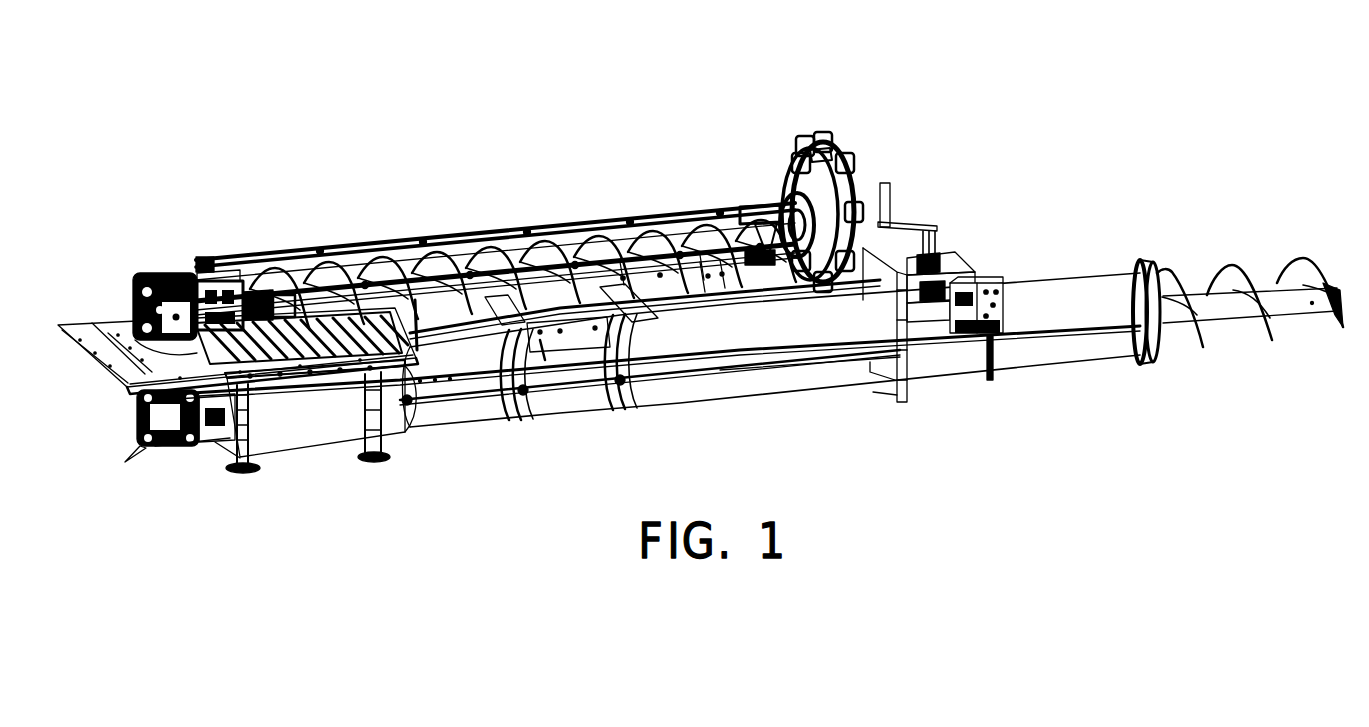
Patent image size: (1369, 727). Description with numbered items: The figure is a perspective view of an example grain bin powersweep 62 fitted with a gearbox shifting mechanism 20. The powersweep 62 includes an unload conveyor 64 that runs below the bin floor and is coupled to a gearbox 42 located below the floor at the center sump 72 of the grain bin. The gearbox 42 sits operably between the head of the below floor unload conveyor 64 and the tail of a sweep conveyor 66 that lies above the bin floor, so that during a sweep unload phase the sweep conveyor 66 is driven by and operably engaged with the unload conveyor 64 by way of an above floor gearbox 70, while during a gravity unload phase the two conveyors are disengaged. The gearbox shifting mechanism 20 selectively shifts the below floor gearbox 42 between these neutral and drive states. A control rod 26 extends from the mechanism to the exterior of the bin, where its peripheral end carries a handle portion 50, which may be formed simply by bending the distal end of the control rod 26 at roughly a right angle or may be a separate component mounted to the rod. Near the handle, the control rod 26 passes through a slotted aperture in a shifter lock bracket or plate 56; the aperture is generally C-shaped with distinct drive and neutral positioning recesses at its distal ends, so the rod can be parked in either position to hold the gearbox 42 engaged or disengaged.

The gearbox shifting mechanism 20 is at (141, 448).
The control rod 26 is at (773, 348).
The gearbox 42 is at (137, 395).
The handle portion 50 is at (993, 357).
The shifter lock bracket or plate 56 is at (1000, 308).
The grain bin powersweep 62 is at (528, 125).
The unload conveyor 64 is at (664, 405).
The sweep conveyor 66 is at (383, 268).
The above floor gearbox 70 is at (152, 282).
The center sump 72 is at (296, 448).